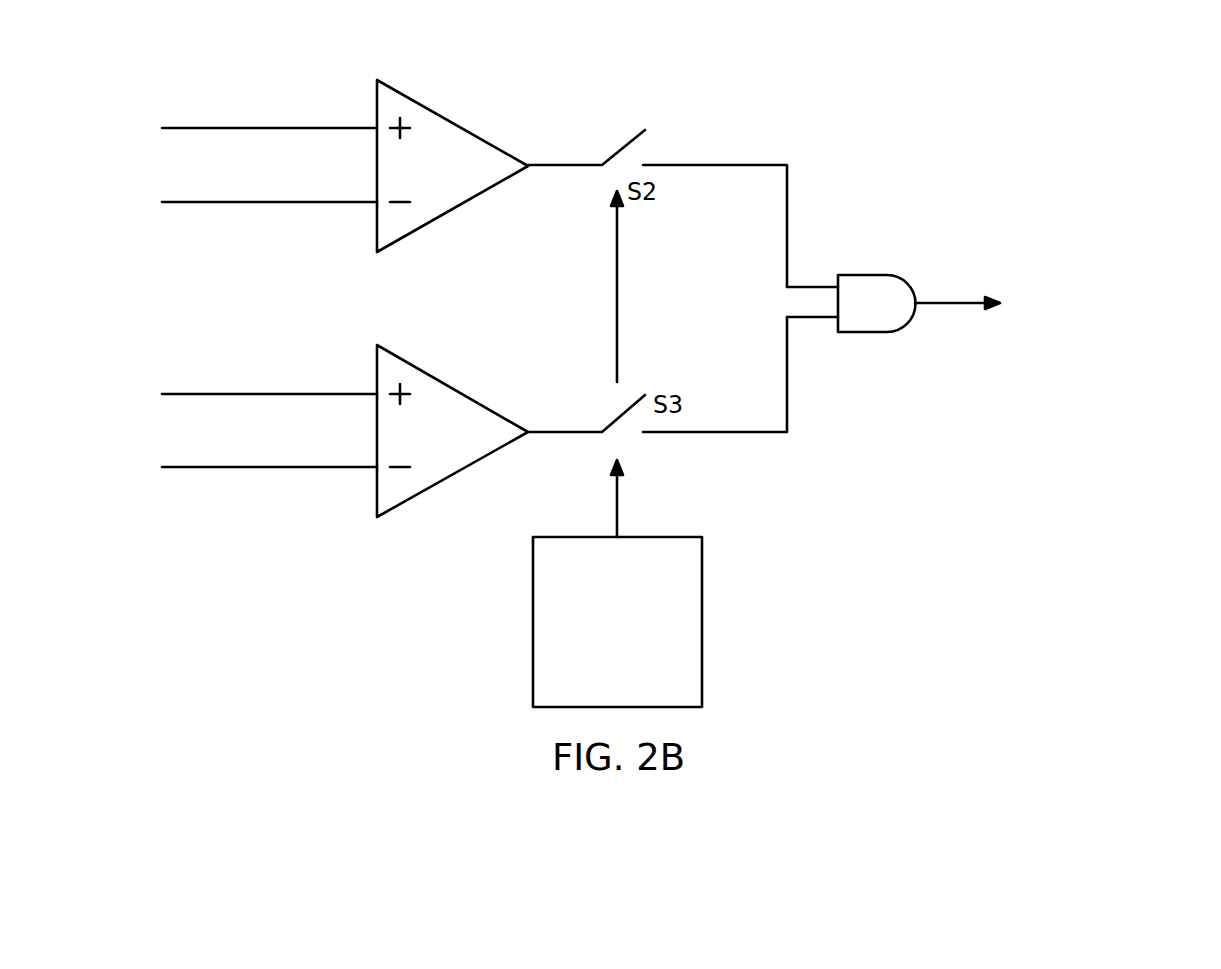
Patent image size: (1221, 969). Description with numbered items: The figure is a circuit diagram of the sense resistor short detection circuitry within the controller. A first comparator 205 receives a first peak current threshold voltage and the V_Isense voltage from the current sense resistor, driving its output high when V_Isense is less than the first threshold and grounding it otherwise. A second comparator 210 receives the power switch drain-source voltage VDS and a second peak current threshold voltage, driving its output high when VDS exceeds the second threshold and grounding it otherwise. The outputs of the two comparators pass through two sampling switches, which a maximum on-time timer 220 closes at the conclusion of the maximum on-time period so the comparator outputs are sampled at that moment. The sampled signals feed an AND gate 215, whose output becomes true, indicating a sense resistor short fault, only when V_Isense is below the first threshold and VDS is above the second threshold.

The first comparator 205 is at (452, 121).
The second comparator 210 is at (452, 387).
The AND gate 215 is at (868, 273).
The maximum on-time timer 220 is at (533, 621).